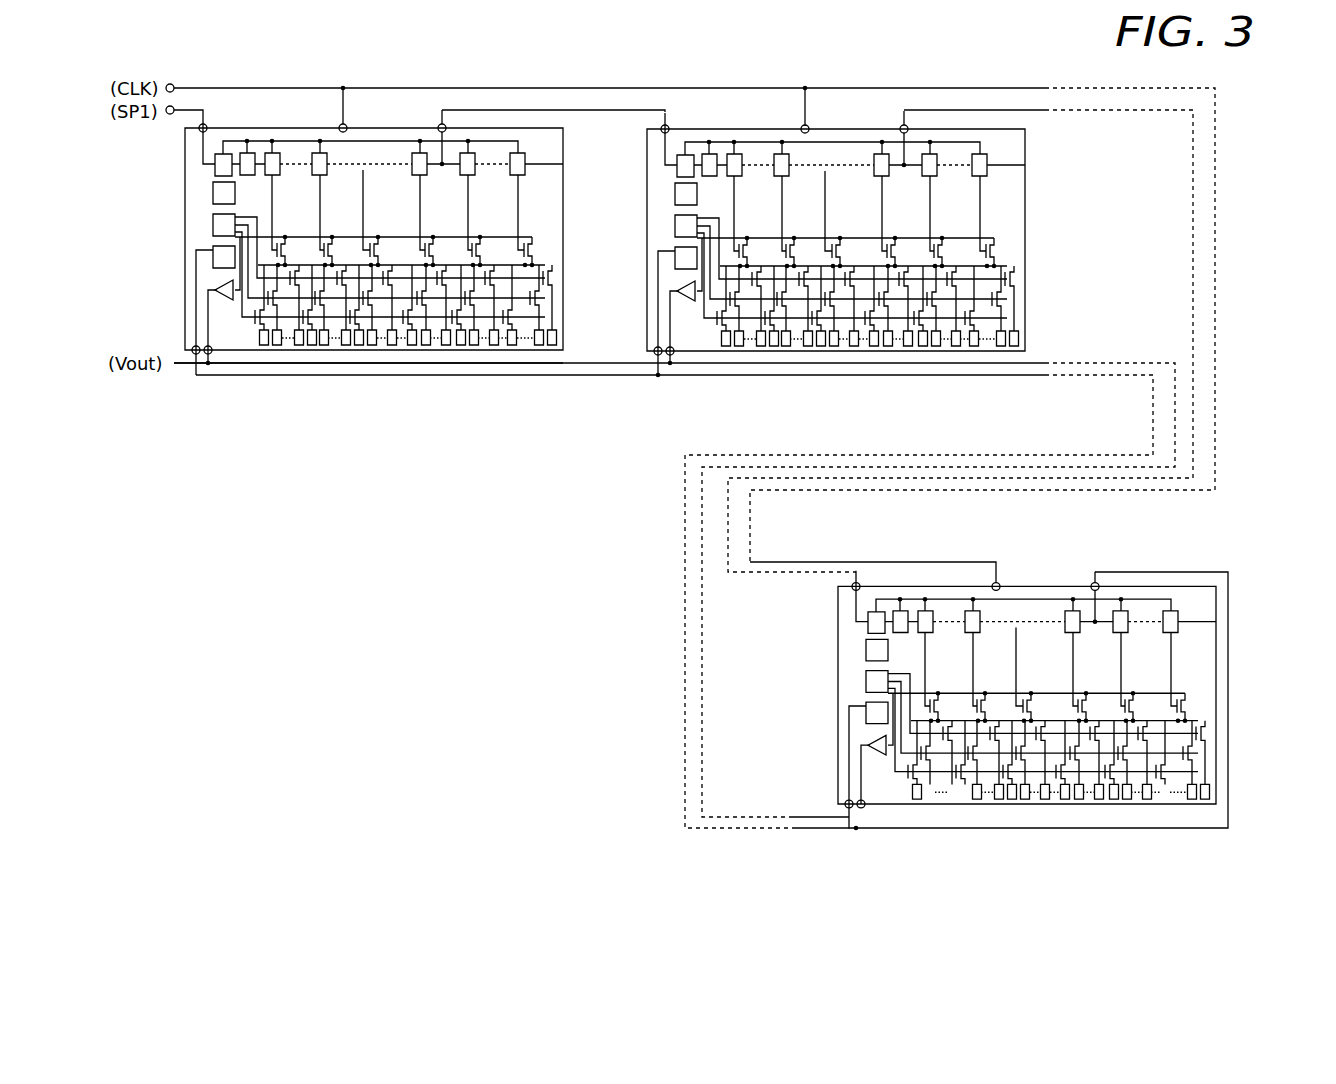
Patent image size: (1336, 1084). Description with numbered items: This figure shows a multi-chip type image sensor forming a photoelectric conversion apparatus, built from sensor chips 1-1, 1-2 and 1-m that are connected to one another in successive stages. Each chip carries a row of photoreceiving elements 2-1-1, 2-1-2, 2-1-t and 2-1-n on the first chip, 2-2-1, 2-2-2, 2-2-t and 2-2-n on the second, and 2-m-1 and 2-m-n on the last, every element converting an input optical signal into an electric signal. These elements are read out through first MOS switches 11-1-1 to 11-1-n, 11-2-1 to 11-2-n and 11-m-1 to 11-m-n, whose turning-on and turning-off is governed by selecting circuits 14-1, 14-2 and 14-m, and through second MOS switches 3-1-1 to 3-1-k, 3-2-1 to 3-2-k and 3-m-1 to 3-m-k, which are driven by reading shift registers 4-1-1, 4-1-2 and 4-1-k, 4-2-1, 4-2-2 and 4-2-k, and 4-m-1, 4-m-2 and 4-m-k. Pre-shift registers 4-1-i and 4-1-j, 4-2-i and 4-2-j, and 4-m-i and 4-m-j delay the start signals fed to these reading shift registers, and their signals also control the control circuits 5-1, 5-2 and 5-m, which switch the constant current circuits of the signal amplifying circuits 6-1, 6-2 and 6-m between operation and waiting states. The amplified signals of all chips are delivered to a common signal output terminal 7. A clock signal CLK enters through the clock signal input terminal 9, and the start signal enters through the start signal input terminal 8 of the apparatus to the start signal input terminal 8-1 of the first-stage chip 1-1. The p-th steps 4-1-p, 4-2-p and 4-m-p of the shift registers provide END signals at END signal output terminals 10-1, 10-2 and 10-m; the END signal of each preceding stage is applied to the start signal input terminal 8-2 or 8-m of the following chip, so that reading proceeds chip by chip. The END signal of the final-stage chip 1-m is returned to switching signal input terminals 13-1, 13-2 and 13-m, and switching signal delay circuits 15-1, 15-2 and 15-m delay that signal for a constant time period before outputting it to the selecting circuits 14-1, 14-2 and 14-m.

The clock signal input terminal 9 is at (170, 84).
The start signal input terminal 8 is at (200, 131).
The start signal input terminal 8-1 is at (200, 152).
The signal output terminal 7 is at (171, 359).
The sensor chip 1-1 is at (437, 352).
The sensor chip 1-2 is at (836, 266).
The sensor chip 1-m is at (1027, 718).
The pre-shift register 4-1-i is at (218, 153).
The pre-shift register 4-1-j is at (247, 153).
The shift register 4-1-1 is at (272, 153).
The shift register 4-1-2 is at (320, 153).
The p-th step of shift register 4-1-p is at (418, 153).
The shift register 4-1-k is at (518, 153).
The END signal output terminal 10-1 is at (442, 123).
The control circuit 5-1 is at (213, 193).
The selecting circuit 14-1 is at (213, 226).
The switching signal delay circuit 15-1 is at (213, 258).
The signal amplifying circuit 6-1 is at (216, 291).
The switching signal input terminal 13-1 is at (195, 357).
The second MOS switch 3-1-1 is at (290, 245).
The second MOS switch 3-1-k is at (534, 250).
The first MOS switch 11-1-1 is at (258, 322).
The first MOS switch 11-1-n is at (550, 286).
The photoreceiving element 2-1-1 is at (263, 346).
The photoreceiving element 2-1-2 is at (277, 346).
The photoreceiving element 2-1-t is at (298, 346).
The photoreceiving element 2-1-n is at (552, 346).
The start signal input terminal 8-2 is at (634, 139).
The pre-shift register 4-2-i is at (680, 118).
The pre-shift register 4-2-j is at (718, 104).
The shift register 4-2-1 is at (739, 118).
The shift register 4-2-2 is at (789, 104).
The p-th step of shift register 4-2-p is at (856, 118).
The shift register 4-2-k is at (988, 118).
The END signal output terminal 10-2 is at (892, 101).
The control circuit 5-2 is at (651, 189).
The selecting circuit 14-2 is at (646, 217).
The switching signal delay circuit 15-2 is at (646, 247).
The signal amplifying circuit 6-2 is at (650, 301).
The switching signal input terminal 13-2 is at (620, 341).
The second MOS switch 3-2-1 is at (809, 228).
The second MOS switch 3-2-k is at (1042, 250).
The first MOS switch 11-2-1 is at (668, 333).
The first MOS switch 11-2-n is at (1059, 298).
The photoreceiving element 2-2-1 is at (703, 380).
The photoreceiving element 2-2-2 is at (738, 366).
The photoreceiving element 2-2-t is at (775, 380).
The photoreceiving element 2-2-n is at (1039, 367).
The start signal input terminal 8-m is at (822, 596).
The pre-shift register 4-m-i is at (865, 583).
The pre-shift register 4-m-j is at (905, 566).
The shift register 4-m-1 is at (934, 582).
The shift register 4-m-2 is at (974, 566).
The p-th step of shift register 4-m-p is at (1046, 591).
The shift register 4-m-k is at (1175, 582).
The END signal output terminal 10-m is at (1085, 574).
The control circuit 5-m is at (837, 640).
The selecting circuit 14-m is at (835, 679).
The switching signal delay circuit 15-m is at (835, 710).
The signal amplifying circuit 6-m is at (836, 744).
The switching signal input terminal 13-m is at (807, 793).
The second MOS switch 3-m-1 is at (858, 682).
The second MOS switch 3-m-k is at (1234, 701).
The first MOS switch 11-m-1 is at (877, 788).
The first MOS switch 11-m-n is at (1251, 753).
The photoreceiving element 2-m-1 is at (945, 813).
The photoreceiving element 2-m-n is at (1204, 817).